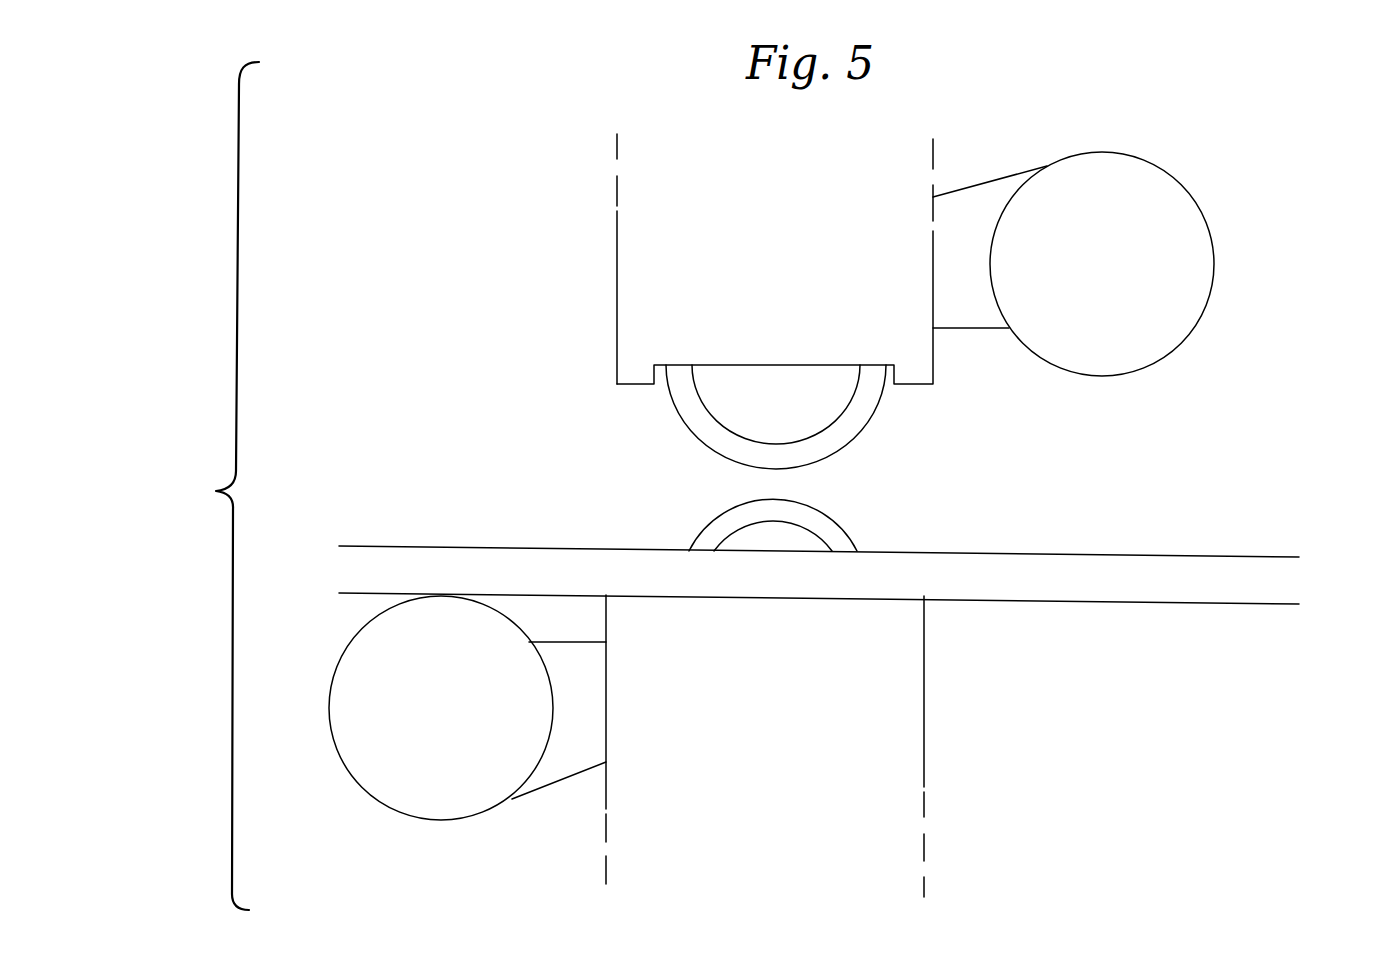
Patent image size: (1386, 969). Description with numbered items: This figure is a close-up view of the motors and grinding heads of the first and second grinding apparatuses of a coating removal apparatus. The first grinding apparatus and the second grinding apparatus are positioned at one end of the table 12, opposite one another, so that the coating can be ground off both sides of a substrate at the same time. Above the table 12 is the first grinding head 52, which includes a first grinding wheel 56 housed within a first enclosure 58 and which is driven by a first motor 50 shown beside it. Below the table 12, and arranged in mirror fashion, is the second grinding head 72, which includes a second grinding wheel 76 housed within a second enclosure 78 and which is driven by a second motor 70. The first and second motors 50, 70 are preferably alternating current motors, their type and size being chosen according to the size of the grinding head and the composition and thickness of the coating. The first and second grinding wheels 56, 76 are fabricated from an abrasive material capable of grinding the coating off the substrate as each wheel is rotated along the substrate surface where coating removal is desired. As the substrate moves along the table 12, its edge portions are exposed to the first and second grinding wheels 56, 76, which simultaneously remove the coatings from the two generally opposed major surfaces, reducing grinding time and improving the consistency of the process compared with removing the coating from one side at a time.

The table 12 is at (1190, 590).
The first motor 50 is at (1155, 207).
The first grinding head 52 is at (852, 158).
The first grinding wheel 56 is at (853, 420).
The first enclosure 58 is at (618, 280).
The second motor 70 is at (402, 785).
The second grinding head 72 is at (822, 858).
The second grinding wheel 76 is at (825, 529).
The second enclosure 78 is at (902, 700).